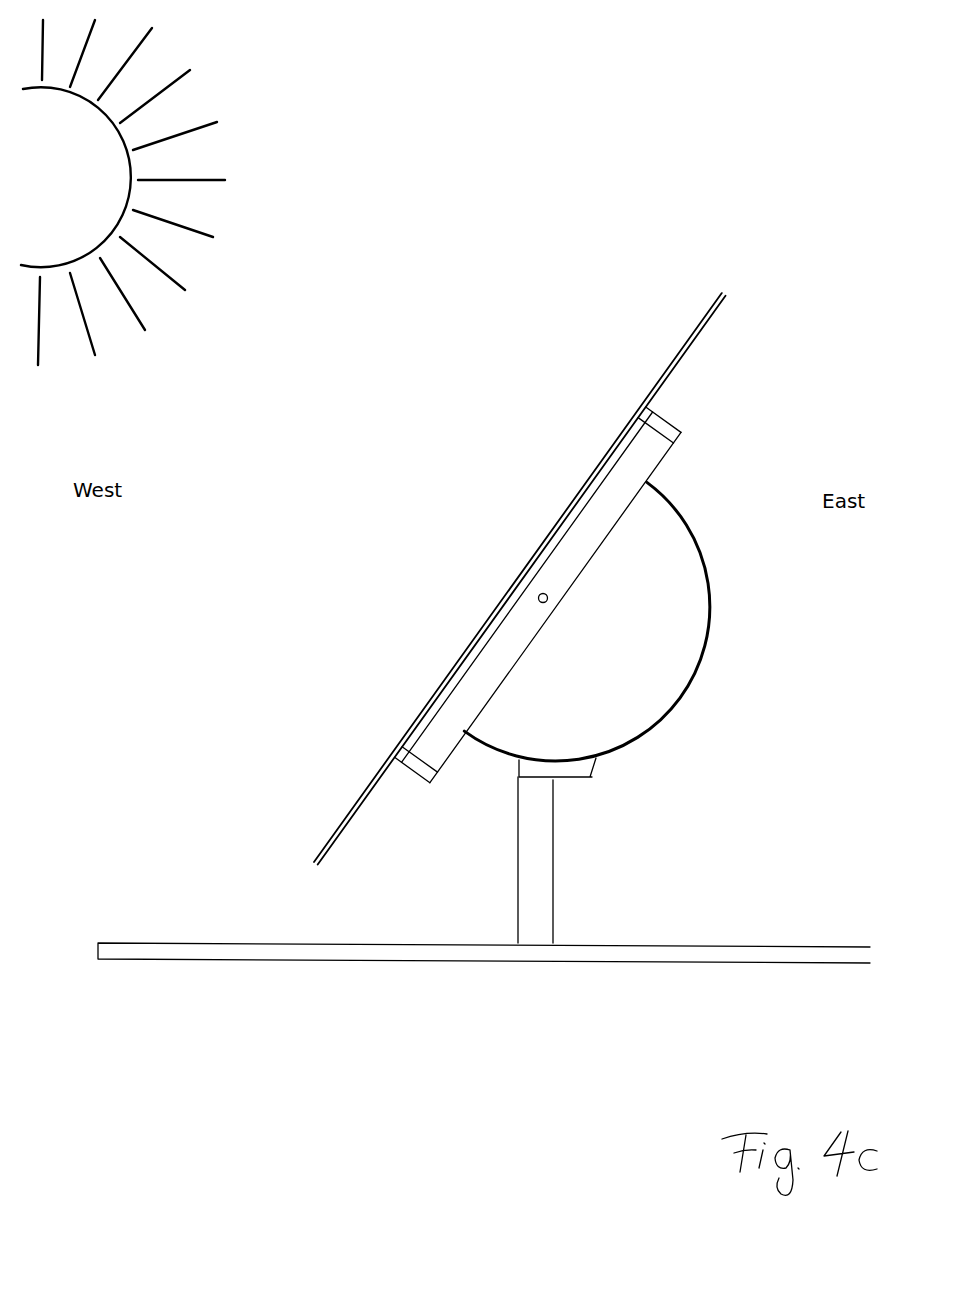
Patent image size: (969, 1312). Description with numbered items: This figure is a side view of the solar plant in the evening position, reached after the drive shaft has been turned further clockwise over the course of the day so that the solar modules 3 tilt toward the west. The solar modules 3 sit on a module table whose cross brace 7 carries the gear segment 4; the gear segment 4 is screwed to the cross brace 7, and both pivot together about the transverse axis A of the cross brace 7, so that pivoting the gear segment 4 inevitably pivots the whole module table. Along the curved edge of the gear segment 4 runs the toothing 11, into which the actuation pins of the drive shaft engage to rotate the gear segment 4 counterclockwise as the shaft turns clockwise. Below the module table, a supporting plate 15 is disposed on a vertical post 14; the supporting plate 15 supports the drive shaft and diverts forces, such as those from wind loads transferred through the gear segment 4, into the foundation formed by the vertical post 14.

The solar module 3 is at (476, 630).
The cross brace 7 is at (640, 448).
The gear segment 4 is at (672, 613).
The toothing 11 is at (752, 735).
The supporting plate 15 is at (575, 766).
The vertical post 14 is at (535, 887).
The transverse axis A is at (551, 600).